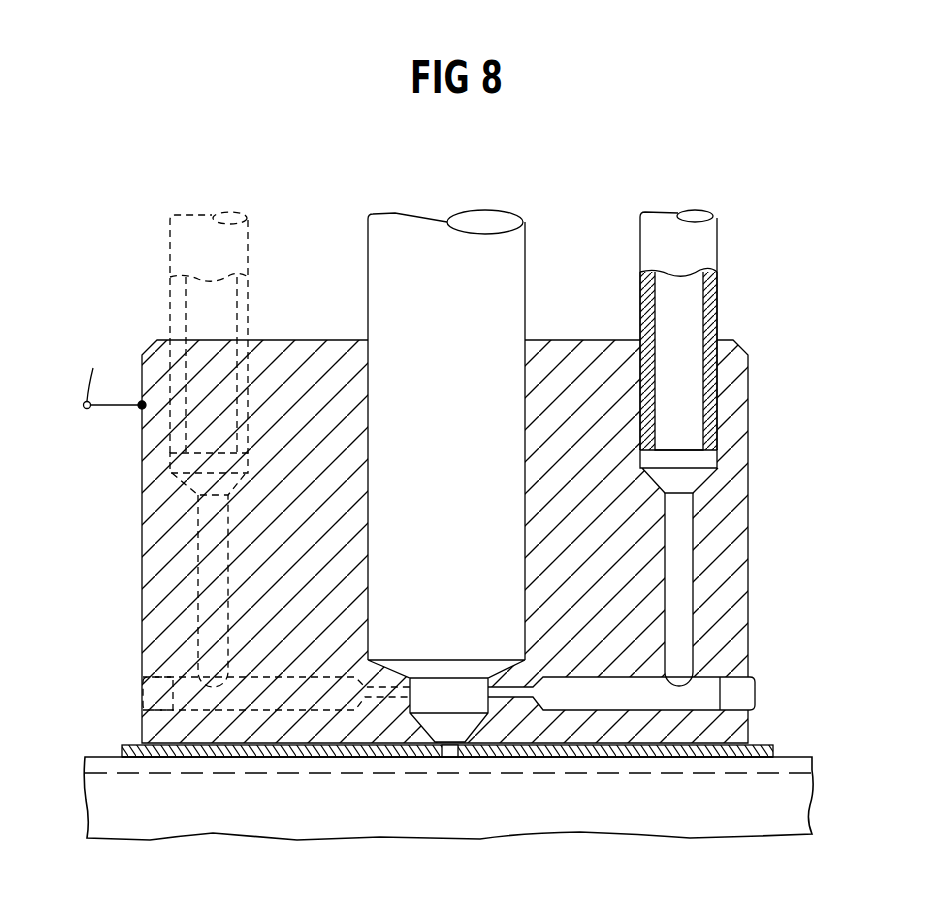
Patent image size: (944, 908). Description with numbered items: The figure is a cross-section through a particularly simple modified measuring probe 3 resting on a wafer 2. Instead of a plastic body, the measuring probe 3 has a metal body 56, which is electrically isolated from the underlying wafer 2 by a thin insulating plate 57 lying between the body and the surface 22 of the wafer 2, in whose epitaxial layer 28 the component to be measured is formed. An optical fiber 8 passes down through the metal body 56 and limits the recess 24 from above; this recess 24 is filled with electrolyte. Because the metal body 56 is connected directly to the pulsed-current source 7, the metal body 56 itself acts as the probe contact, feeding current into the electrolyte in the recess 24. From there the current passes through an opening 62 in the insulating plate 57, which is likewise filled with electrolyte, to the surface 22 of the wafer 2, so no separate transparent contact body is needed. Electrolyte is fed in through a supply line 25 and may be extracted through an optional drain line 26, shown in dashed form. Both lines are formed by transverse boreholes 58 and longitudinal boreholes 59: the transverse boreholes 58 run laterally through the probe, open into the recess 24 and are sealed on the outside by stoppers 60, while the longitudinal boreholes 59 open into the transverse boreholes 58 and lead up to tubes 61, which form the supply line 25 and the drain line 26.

The wafer 2 is at (638, 820).
The measuring probe 3 is at (744, 199).
The pulsed-current source 7 is at (115, 373).
The optical fiber 8 is at (405, 228).
The surface 22 is at (100, 752).
The recess 24 is at (451, 694).
The supply line 25 is at (634, 205).
The drain line 26 is at (246, 200).
The epitaxial layer 28 is at (800, 757).
The metal body 56 is at (737, 486).
The insulating plate 57 is at (727, 758).
The transverse boreholes 58 is at (592, 698).
The longitudinal boreholes 59 is at (685, 566).
The stoppers 60 is at (748, 691).
The tubes 61 is at (700, 244).
The opening 62 is at (449, 758).